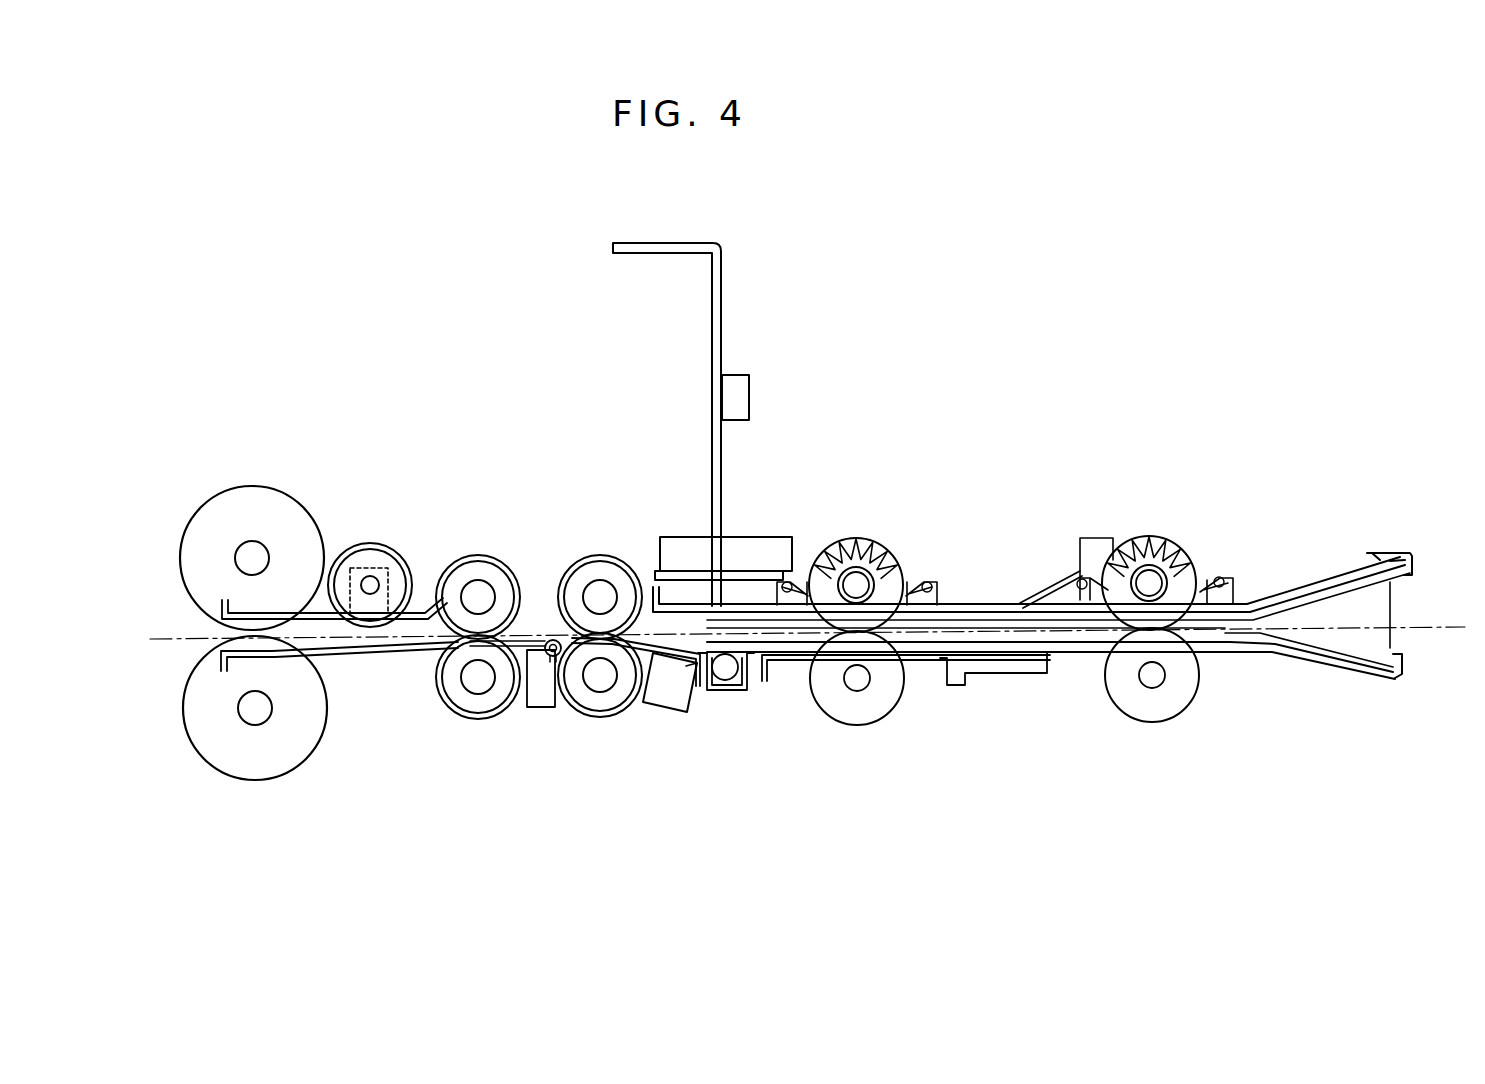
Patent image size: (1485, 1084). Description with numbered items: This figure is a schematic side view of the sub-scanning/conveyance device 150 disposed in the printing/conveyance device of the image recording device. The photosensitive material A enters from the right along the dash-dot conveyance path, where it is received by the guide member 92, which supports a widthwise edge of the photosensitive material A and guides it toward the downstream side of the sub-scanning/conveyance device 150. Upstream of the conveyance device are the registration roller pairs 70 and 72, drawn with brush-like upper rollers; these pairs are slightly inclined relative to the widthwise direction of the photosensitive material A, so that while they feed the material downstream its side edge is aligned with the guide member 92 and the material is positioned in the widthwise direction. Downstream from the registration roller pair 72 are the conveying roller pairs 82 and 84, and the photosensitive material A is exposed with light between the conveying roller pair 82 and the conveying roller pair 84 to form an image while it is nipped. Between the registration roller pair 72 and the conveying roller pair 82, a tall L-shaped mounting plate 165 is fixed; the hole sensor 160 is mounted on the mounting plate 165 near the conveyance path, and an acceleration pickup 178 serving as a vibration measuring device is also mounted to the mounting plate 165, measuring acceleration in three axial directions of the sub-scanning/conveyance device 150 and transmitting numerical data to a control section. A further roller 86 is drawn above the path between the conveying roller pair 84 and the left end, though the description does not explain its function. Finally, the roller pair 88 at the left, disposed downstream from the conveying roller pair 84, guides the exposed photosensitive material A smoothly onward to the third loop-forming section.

The sub-scanning/conveyance device 150 is at (1177, 330).
The roller pair 88 is at (192, 672).
The roller 86 is at (377, 557).
The conveying roller pair 84 is at (482, 558).
The conveying roller pair 82 is at (604, 558).
The hole sensor 160 is at (755, 548).
The mounting plate 165 is at (720, 333).
The acceleration pickup 178 is at (741, 405).
The registration roller pair 72 is at (870, 536).
The registration roller pair 70 is at (1148, 547).
The guide member 92 is at (1380, 603).
The photosensitive material A is at (1428, 629).